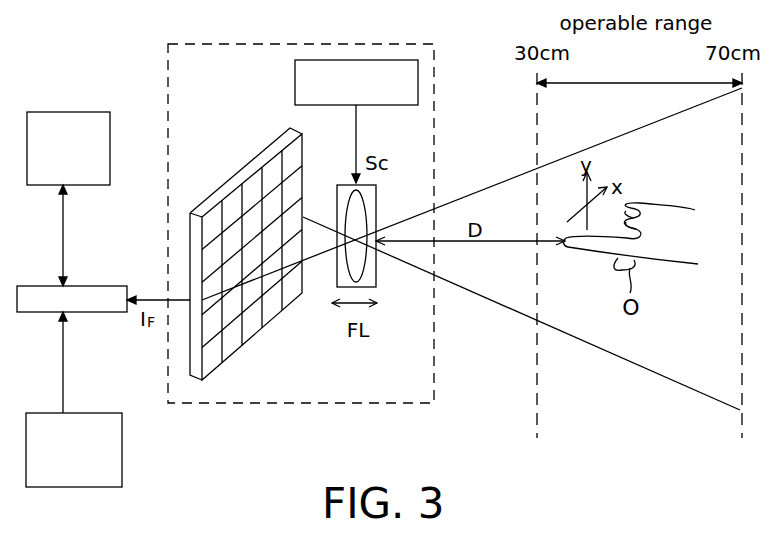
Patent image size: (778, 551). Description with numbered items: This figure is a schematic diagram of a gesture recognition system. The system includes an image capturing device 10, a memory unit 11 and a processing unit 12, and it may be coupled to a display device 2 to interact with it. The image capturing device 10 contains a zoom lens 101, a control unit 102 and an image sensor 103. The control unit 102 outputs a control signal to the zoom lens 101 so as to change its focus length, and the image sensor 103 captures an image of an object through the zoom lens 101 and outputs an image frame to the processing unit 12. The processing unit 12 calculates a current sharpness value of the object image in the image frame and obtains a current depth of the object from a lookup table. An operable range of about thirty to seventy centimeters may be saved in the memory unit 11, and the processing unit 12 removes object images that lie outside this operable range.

The display device 2 is at (48, 112).
The image capturing device 10 is at (238, 403).
The memory unit 11 is at (74, 487).
The processing unit 12 is at (88, 312).
The zoom lens 101 is at (340, 198).
The control unit 102 is at (303, 60).
The image sensor 103 is at (225, 183).